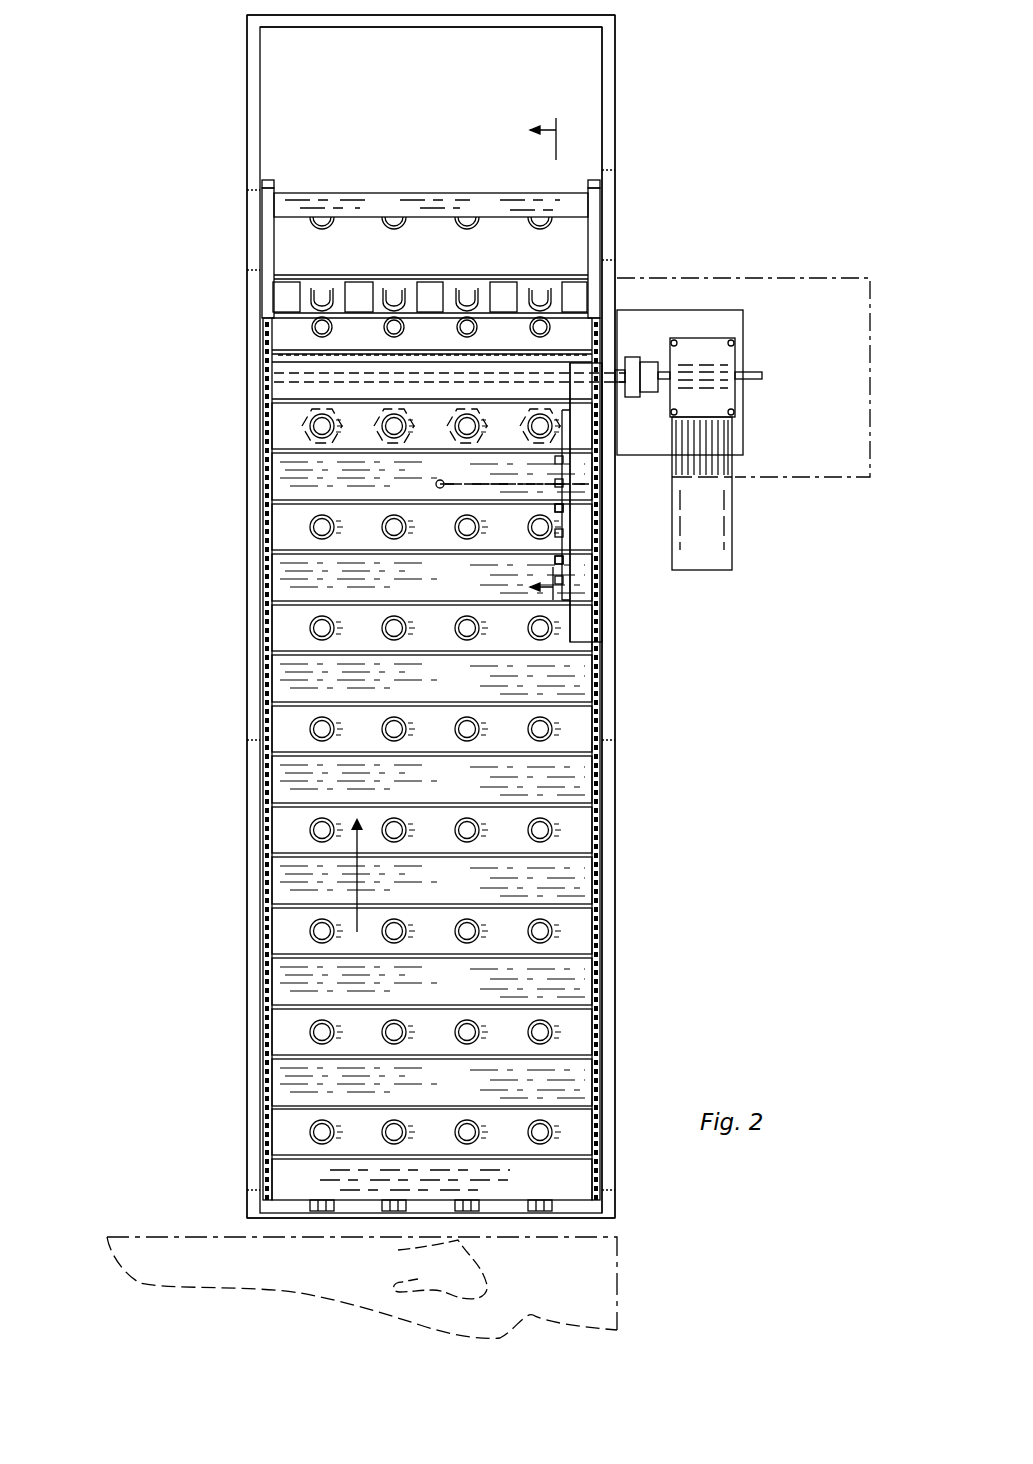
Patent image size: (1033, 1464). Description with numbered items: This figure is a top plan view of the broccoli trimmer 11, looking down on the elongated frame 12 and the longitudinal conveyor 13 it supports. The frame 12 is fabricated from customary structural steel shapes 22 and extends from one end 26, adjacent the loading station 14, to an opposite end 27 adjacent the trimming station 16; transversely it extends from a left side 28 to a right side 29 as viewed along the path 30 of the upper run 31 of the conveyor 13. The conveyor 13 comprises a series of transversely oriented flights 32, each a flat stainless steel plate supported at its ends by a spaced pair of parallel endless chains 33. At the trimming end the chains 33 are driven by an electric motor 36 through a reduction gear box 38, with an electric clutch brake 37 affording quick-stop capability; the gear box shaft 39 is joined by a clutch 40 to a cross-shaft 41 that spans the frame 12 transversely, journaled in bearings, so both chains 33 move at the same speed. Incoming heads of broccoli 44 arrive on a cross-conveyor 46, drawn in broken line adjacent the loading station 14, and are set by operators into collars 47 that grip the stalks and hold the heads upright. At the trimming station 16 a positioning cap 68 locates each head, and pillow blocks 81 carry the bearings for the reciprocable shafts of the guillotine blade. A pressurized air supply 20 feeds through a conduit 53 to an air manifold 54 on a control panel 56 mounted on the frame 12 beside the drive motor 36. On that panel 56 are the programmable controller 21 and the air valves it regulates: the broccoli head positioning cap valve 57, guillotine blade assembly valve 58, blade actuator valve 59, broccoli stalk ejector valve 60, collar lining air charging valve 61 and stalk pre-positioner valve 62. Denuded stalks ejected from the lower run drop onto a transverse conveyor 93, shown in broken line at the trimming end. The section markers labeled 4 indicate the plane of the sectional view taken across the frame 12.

The broccoli trimmer 11 is at (160, 445).
The elongated frame 12 is at (243, 232).
The longitudinal conveyor 13 is at (292, 683).
The loading station 14 is at (188, 1206).
The trimming station 16 is at (409, 178).
The pressurized air supply 20 is at (440, 484).
The programmable controller 21 is at (598, 637).
The structural steel shapes 22 is at (600, 58).
The frame end 26 is at (598, 1218).
The opposite frame end 27 is at (262, 15).
The left side 28 is at (250, 974).
The right side 29 is at (614, 905).
The path 30 is at (356, 876).
The upper run 31 is at (452, 692).
The flights 32 is at (284, 830).
The endless chains 33 is at (268, 1058).
The electric motor 36 is at (722, 530).
The electric clutch brake 37 is at (650, 360).
The reduction gear box 38 is at (704, 355).
The gear box shaft 39 is at (758, 379).
The clutch 40 is at (632, 357).
The cross-shaft 41 is at (340, 374).
The head of broccoli 44 is at (470, 298).
The cross-conveyor 46 is at (290, 1278).
The collar 47 is at (466, 1118).
The conduit 53 is at (481, 486).
The air manifold 54 is at (556, 508).
The control panel 56 is at (583, 424).
The broccoli head positioning cap valve 57 is at (563, 460).
The guillotine blade assembly valve 58 is at (563, 483).
The blade actuator valve 59 is at (563, 508).
The broccoli stalk ejector valve 60 is at (563, 533).
The collar lining air charging valve 61 is at (563, 560).
The stalk pre-positioner valve 62 is at (563, 580).
The positioning cap 68 is at (464, 226).
The pillow blocks 81 is at (360, 296).
The transverse conveyor 93 is at (780, 278).
The section line 4- 4 is at (529, 359).